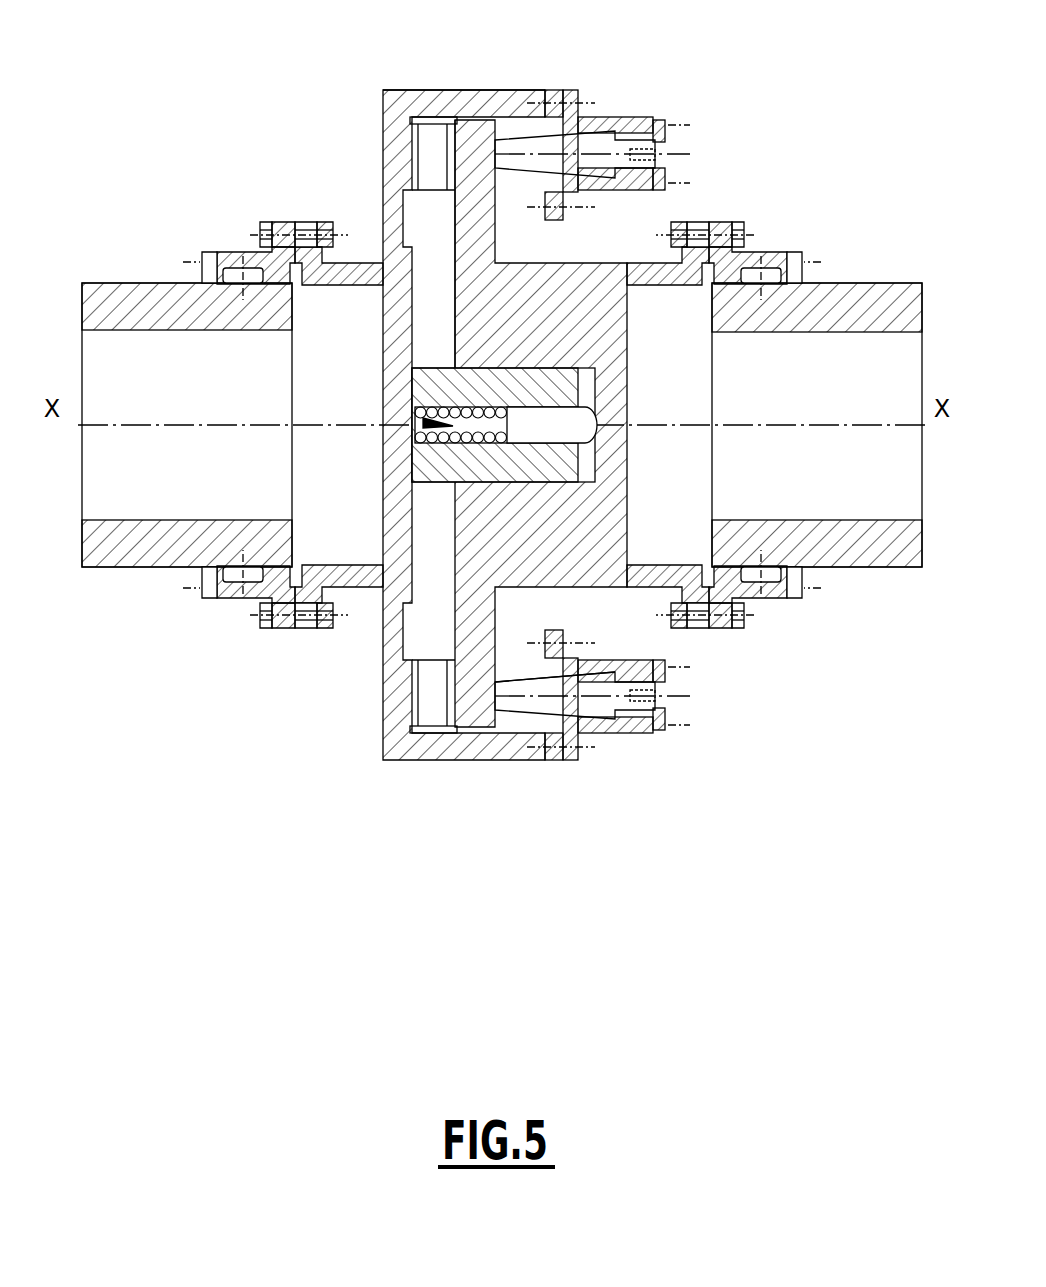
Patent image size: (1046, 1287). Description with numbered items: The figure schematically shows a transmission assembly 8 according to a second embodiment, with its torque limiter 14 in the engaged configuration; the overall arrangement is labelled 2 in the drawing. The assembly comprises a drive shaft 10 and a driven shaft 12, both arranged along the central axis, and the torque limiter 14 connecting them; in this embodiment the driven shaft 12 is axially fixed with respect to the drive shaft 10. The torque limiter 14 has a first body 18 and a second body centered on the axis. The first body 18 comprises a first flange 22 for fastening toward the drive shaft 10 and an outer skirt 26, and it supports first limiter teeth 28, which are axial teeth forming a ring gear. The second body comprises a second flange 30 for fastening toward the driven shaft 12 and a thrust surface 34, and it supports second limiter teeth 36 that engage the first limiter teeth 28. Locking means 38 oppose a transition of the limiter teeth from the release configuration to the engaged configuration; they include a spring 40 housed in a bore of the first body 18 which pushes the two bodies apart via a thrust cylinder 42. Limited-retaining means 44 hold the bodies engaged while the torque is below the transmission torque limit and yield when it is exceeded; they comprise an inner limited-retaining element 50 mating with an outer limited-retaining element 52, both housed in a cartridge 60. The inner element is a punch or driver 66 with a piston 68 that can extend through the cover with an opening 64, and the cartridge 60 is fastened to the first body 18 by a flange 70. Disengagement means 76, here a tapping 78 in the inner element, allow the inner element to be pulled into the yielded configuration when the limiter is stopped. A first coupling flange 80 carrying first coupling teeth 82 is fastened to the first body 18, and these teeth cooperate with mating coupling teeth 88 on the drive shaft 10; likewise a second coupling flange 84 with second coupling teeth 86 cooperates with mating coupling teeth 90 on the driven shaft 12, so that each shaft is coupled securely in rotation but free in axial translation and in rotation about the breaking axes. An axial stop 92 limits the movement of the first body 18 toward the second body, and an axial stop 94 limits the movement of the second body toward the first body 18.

The transmission assembly 2 is at (258, 113).
The transmission assembly 8 is at (346, 803).
The drive shaft 10 is at (125, 548).
The driven shaft 12 is at (858, 540).
The torque limiter 14 is at (349, 715).
The first body 18 is at (352, 206).
The first flange 22 is at (318, 278).
The outer skirt 26 is at (470, 90).
The first limiter teeth 28 is at (410, 152).
The second flange 30 is at (658, 578).
The thrust surface 34 is at (512, 678).
The second limiter teeth 36 is at (452, 193).
The locking means 38 is at (413, 422).
The spring 40 is at (413, 438).
The thrust cylinder 42 is at (560, 418).
The limited-retaining means 44 is at (590, 799).
The inner limited-retaining element 50 is at (592, 675).
The outer limited-retaining element 52 is at (625, 744).
The cartridge 60 is at (631, 93).
The cover with an opening 64 is at (668, 130).
The punch or driver 66 is at (598, 165).
The piston 68 is at (624, 150).
The flange 70 is at (563, 212).
The disengagement means 76 is at (676, 714).
The tapping 78 is at (668, 680).
The first coupling flange 80 is at (258, 605).
The first coupling teeth 82 is at (228, 600).
The second coupling flange 84 is at (733, 620).
The second coupling teeth 86 is at (775, 600).
The mating coupling teeth 88 is at (240, 557).
The mating coupling teeth 90 is at (752, 560).
The axial stop 92 is at (204, 250).
The axial stop 94 is at (797, 250).